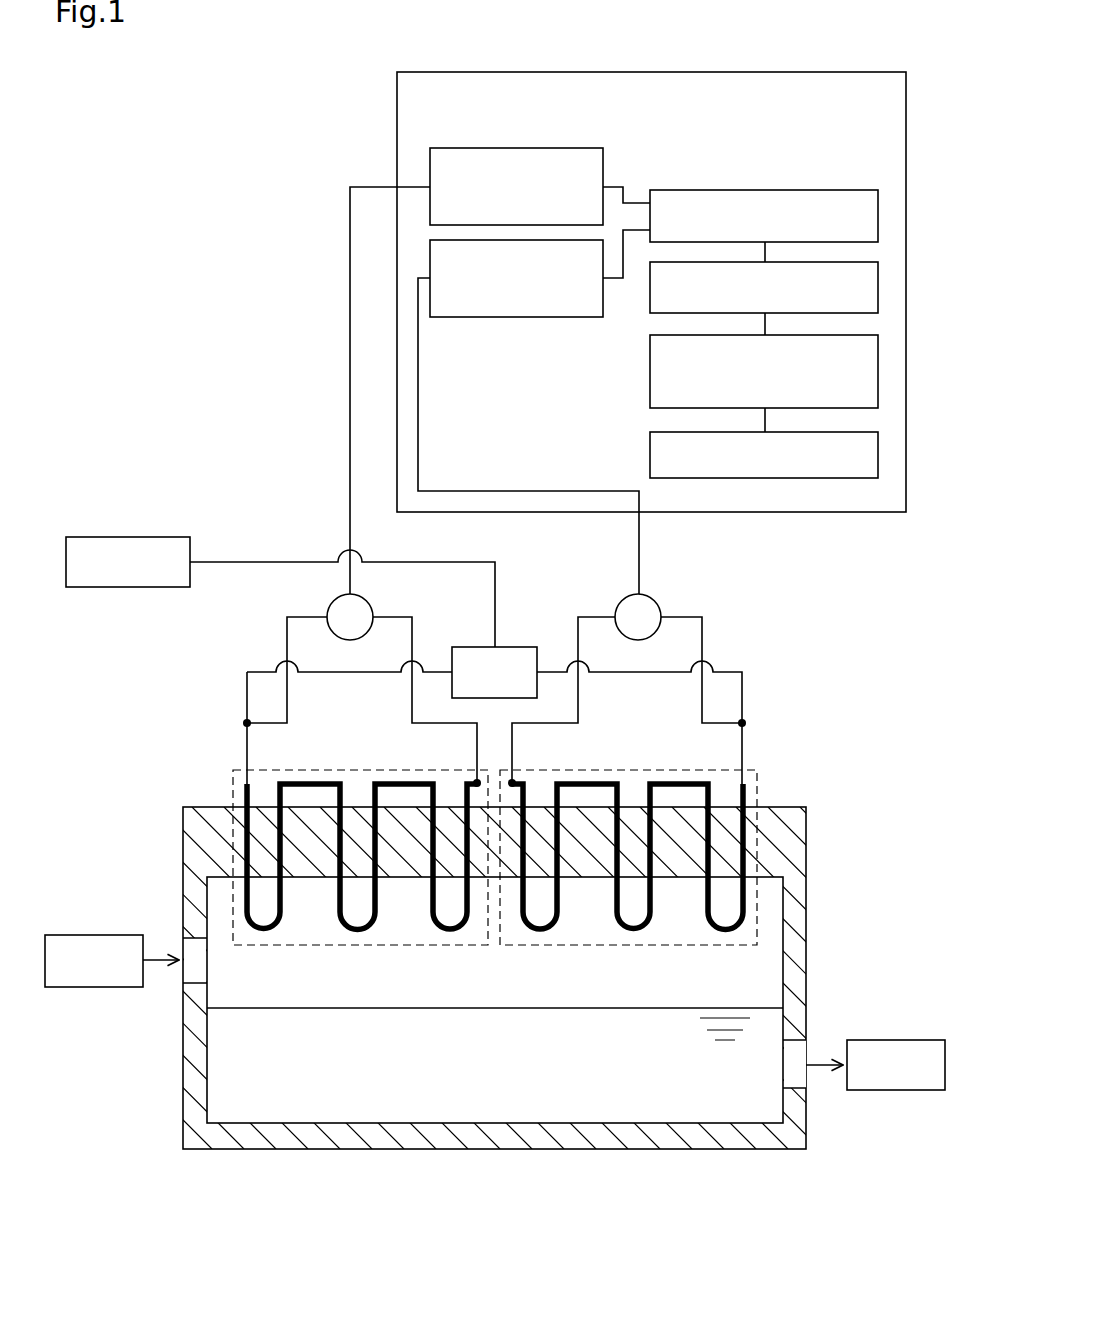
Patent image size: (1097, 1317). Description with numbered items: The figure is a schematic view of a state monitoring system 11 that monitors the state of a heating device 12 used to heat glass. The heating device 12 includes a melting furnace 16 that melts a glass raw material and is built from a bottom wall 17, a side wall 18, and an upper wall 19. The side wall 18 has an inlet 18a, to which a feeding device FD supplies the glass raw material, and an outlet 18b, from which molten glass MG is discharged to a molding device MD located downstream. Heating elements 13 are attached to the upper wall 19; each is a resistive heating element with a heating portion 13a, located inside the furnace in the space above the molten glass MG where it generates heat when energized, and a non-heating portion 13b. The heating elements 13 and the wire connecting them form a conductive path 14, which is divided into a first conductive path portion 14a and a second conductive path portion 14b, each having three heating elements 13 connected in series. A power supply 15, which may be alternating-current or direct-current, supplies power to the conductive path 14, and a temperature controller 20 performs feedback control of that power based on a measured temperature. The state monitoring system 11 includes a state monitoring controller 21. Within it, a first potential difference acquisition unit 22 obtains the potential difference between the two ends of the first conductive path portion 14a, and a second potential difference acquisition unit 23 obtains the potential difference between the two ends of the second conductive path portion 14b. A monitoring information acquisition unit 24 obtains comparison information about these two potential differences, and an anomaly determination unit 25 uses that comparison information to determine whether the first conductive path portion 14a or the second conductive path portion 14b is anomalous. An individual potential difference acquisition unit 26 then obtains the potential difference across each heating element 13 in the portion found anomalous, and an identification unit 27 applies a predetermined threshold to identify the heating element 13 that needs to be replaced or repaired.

The state monitoring system 11 is at (183, 139).
The heating device 12 is at (131, 489).
The heating element 13 is at (549, 853).
The heating portion 13a is at (746, 905).
The non-heating portion 13b is at (746, 848).
The conductive path 14 is at (242, 670).
The first conductive path portion 14a is at (352, 770).
The second conductive path portion 14b is at (632, 770).
The power supply 15 is at (520, 647).
The melting furnace 16 is at (548, 978).
The bottom wall 17 is at (305, 1149).
The side wall 18 is at (492, 996).
The inlet 18a is at (180, 942).
The outlet 18b is at (808, 1047).
The upper wall 19 is at (201, 805).
The temperature controller 20 is at (158, 537).
The state monitoring controller 21 is at (855, 66).
The first potential difference acquisition unit 22 is at (578, 148).
The second potential difference acquisition unit 23 is at (580, 318).
The monitoring information acquisition unit 24 is at (878, 212).
The anomaly determination unit 25 is at (878, 285).
The individual potential difference acquisition unit 26 is at (878, 370).
The identification unit 27 is at (878, 453).
The molten glass MG is at (740, 1007).
The feeding device FD is at (80, 933).
The molding device MD is at (912, 1039).